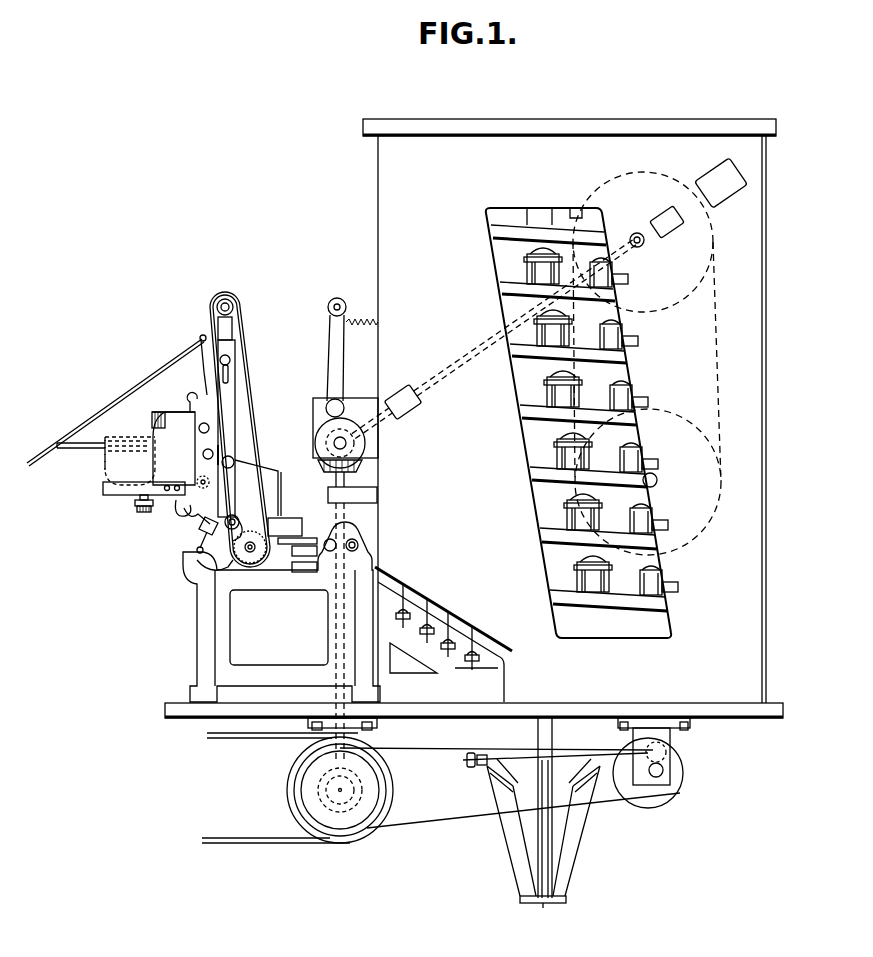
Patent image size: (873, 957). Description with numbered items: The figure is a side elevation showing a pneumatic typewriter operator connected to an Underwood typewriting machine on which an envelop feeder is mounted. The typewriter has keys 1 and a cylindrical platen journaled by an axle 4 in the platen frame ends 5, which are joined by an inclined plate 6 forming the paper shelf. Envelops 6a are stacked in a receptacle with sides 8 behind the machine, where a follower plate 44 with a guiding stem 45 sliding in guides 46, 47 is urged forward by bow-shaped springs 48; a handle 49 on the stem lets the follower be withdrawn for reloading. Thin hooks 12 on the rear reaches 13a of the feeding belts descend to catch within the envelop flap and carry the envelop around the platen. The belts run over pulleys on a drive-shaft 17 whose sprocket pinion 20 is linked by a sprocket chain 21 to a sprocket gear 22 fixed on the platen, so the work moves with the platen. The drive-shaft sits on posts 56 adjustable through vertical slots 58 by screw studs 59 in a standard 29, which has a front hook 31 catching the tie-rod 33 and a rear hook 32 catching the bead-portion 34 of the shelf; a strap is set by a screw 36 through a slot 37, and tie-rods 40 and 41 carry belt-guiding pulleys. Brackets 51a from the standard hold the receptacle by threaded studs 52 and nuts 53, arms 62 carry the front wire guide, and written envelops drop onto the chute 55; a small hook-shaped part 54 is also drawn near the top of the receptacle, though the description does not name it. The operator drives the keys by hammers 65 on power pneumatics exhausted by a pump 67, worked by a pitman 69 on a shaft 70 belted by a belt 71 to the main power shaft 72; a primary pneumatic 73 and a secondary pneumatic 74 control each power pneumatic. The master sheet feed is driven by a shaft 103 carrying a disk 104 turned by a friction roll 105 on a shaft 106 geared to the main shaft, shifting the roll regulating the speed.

The keys 1 is at (478, 658).
The axle 4 is at (250, 552).
The platen frame ends 5 is at (283, 520).
The inclined plate 6 is at (229, 551).
The envelops 6a is at (171, 411).
The receptacle sides 8 is at (174, 448).
The hooks 12 is at (200, 352).
The rear reaches of belts 13a is at (205, 380).
The drive-shaft 17 is at (235, 306).
The sprocket pinion 20 is at (216, 308).
The sprocket chain 21 is at (235, 461).
The sprocket gear 22 is at (263, 558).
The standard 29 is at (236, 428).
The front hook 31 is at (237, 518).
The rear hook 32 is at (178, 509).
The tie-rod 33 is at (234, 514).
The bead-portion 34 is at (190, 519).
The screw 36 is at (220, 455).
The slot 37 is at (203, 453).
The tie-rod 40 is at (199, 429).
The tie-rod 41 is at (197, 482).
The follower plate 44 is at (152, 422).
The guiding stem 45 is at (92, 444).
The guide 46 is at (130, 461).
The guide 47 is at (108, 440).
The bow-shaped springs 48 is at (108, 470).
The handle 49 is at (57, 449).
The brackets 51a is at (112, 495).
The threaded studs 52 is at (146, 513).
The nuts 53 is at (139, 501).
The hook 54 is at (189, 403).
The inclined table or chute 55 is at (127, 397).
The posts 56 is at (233, 331).
The vertical slots 58 is at (229, 377).
The screw studs 59 is at (231, 361).
The arms 62 is at (280, 490).
The hammers 65 is at (406, 608).
The exhaust pump or bellows 67 is at (549, 893).
The pitman 69 is at (617, 780).
The shaft 70 is at (657, 778).
The belt 71 is at (445, 751).
The main power shaft 72 is at (287, 791).
The primary pneumatic 73 is at (606, 450).
The secondary pneumatic 74 is at (540, 447).
The shaft 103 is at (640, 248).
The disk 104 is at (643, 242).
The friction roll 105 is at (672, 236).
The shaft 106 is at (480, 347).